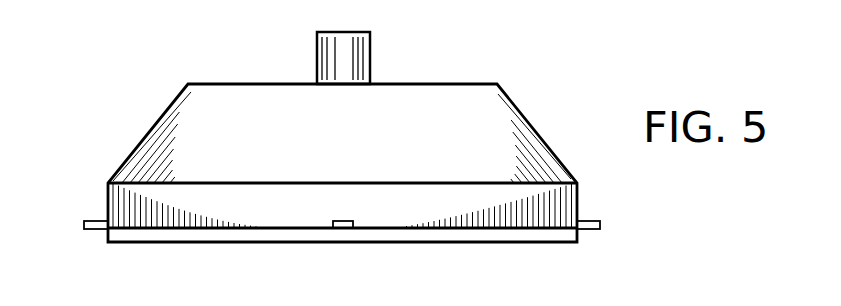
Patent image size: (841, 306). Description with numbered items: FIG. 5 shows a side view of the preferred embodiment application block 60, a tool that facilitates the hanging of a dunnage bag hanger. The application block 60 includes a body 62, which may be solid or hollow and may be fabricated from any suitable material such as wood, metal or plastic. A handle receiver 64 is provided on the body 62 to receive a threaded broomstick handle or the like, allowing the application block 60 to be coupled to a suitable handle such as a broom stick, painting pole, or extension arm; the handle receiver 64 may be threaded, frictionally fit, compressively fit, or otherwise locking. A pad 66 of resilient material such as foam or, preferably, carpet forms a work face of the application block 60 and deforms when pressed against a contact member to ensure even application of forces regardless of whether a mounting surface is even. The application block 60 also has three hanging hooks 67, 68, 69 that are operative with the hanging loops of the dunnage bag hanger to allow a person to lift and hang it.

The application block 60 is at (338, 155).
The body 62 is at (448, 120).
The handle receiver 64 is at (370, 53).
The pad 66 is at (212, 237).
The hanging hook 67 is at (592, 221).
The hanging hook 68 is at (340, 230).
The hanging hook 69 is at (86, 219).